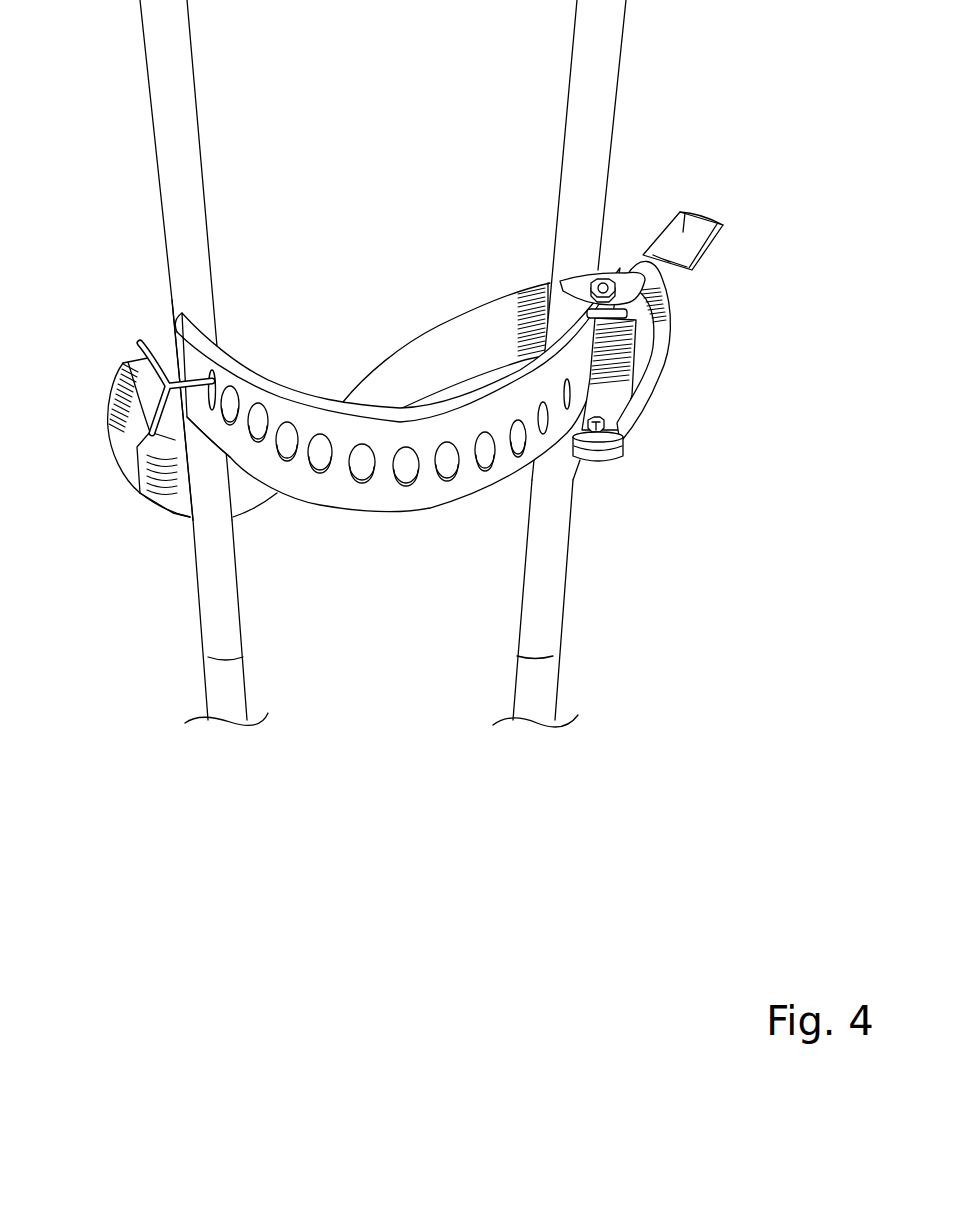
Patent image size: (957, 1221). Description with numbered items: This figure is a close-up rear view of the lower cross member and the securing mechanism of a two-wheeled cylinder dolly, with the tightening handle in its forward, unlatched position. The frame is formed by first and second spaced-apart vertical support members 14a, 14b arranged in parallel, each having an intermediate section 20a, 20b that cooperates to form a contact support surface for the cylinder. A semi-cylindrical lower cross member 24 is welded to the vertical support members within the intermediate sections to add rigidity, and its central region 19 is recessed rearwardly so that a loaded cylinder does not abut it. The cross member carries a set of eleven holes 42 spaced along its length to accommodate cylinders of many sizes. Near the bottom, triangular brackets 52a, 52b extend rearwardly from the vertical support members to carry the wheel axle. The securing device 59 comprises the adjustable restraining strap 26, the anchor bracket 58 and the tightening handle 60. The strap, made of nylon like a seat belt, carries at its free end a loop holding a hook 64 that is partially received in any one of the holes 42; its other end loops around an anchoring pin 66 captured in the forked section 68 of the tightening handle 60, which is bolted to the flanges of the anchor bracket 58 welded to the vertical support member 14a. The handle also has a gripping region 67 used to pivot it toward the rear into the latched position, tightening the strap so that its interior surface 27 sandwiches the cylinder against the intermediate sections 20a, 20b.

The first vertical support member 14a is at (572, 130).
The second vertical support member 14b is at (185, 132).
The central region 19 is at (407, 508).
The intermediate section 20a is at (548, 607).
The intermediate section 20b is at (213, 608).
The lower cross member 24 is at (363, 510).
The restraining strap 26 is at (405, 352).
The interior surface 27 is at (375, 392).
The holes 42 is at (290, 460).
The bracket 52a is at (542, 696).
The bracket 52b is at (217, 693).
The anchor bracket 58 is at (598, 284).
The securing device 59 is at (632, 447).
The tightening handle 60 is at (680, 232).
The hook 64 is at (150, 338).
The anchoring pin 66 is at (620, 398).
The gripping region 67 is at (724, 233).
The forked section 68 is at (662, 333).